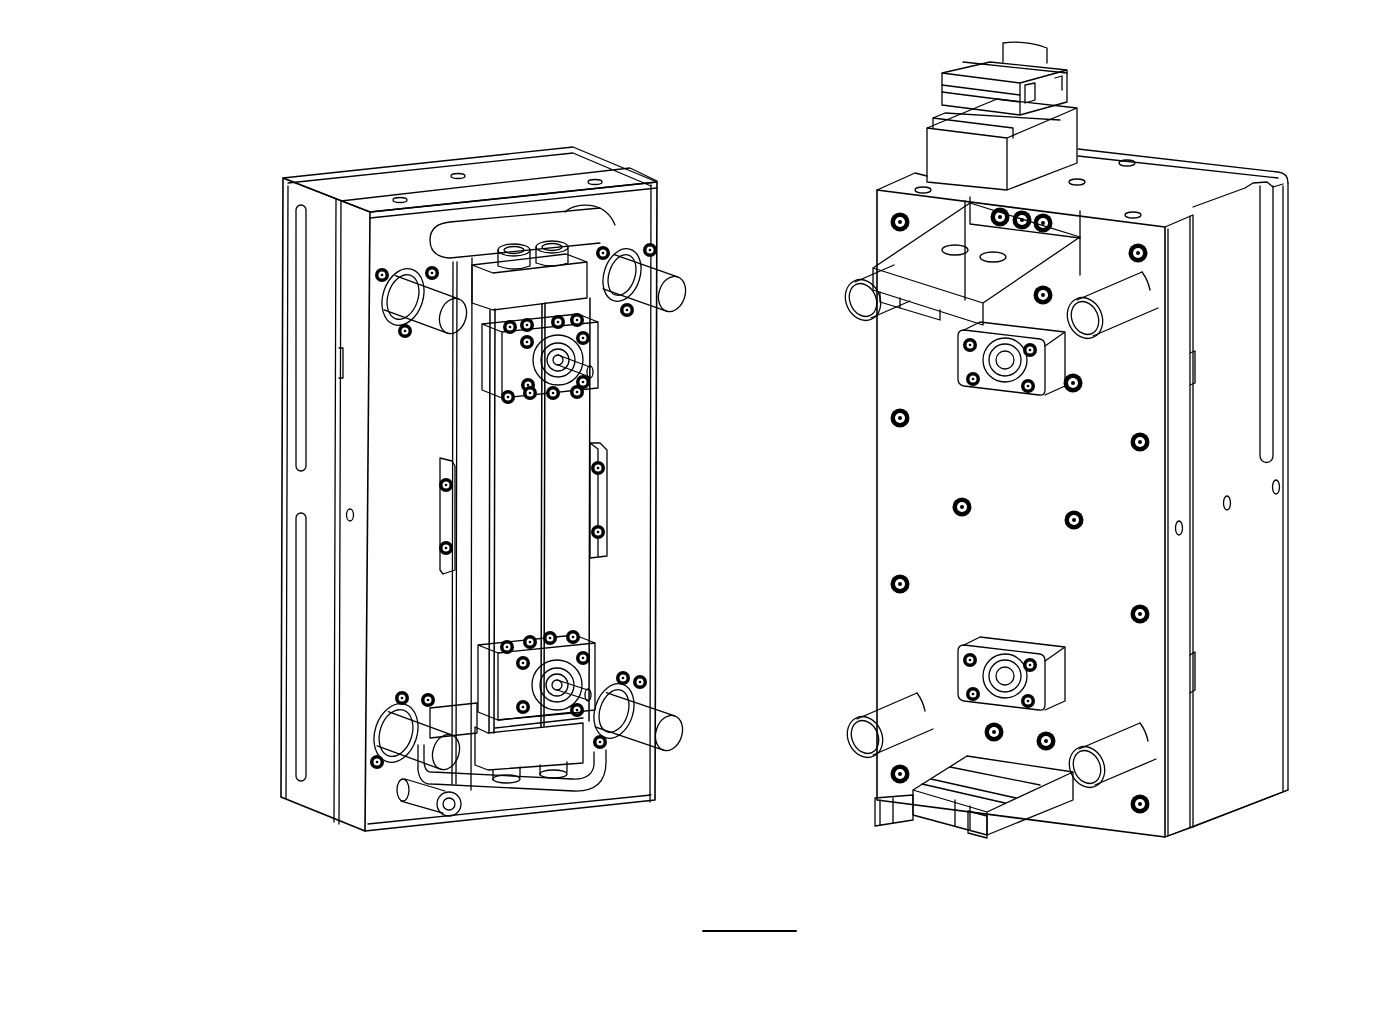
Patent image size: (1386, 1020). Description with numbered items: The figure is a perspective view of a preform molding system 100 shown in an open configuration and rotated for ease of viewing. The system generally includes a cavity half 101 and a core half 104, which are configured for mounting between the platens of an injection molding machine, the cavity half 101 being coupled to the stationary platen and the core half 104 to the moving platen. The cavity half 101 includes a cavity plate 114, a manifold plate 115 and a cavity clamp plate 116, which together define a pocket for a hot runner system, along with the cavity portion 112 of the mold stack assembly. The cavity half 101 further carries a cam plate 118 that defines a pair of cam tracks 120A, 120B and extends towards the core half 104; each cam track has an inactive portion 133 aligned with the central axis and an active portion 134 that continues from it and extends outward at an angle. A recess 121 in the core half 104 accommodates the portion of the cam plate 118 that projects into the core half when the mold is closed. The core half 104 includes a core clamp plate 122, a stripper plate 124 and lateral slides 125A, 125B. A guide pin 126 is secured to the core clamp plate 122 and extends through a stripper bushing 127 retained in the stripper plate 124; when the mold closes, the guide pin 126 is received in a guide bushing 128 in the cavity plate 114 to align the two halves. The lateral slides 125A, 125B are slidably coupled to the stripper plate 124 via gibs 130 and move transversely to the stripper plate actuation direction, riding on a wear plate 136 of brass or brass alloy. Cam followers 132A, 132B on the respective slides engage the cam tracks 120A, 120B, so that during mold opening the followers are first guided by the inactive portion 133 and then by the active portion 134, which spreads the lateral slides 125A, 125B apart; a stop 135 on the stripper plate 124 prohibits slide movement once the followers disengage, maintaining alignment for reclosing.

The preform molding system 100 is at (1283, 33).
The core half 104 is at (436, 152).
The cavity half 101 is at (1150, 148).
The recess 121 is at (457, 224).
The gibs 130 is at (430, 240).
The core clamp plate 122 is at (285, 281).
The stripper plate 124 is at (353, 308).
The wear plate 136 is at (463, 425).
The stop 135 is at (440, 548).
The lateral slide 125A is at (520, 497).
The lateral slide 125B is at (573, 532).
The stripper bushing 127 is at (645, 690).
The guide pin 126 is at (652, 716).
The cam follower 132A is at (514, 246).
The cam follower 132B is at (553, 244).
The cavity portion 112 is at (947, 347).
The cavity plate 114 is at (1180, 332).
The manifold plate 115 is at (1223, 383).
The cavity clamp plate 116 is at (1285, 390).
The guide bushing 128 is at (893, 712).
The cam track 120A is at (950, 814).
The cam track 120B is at (898, 812).
The inactive portion 133 is at (998, 802).
The active portion 134 is at (978, 820).
The cam plate 118 is at (1058, 798).